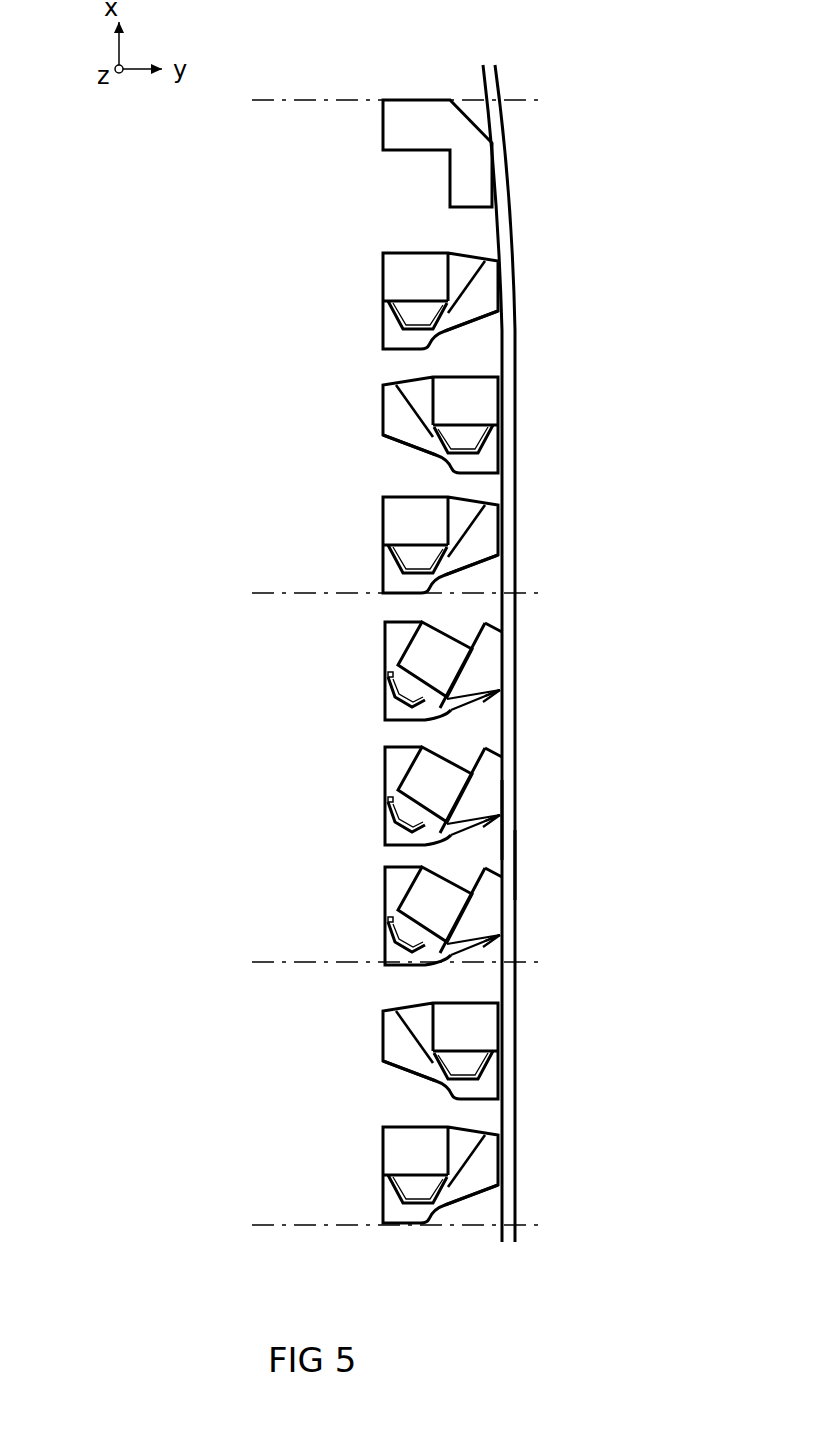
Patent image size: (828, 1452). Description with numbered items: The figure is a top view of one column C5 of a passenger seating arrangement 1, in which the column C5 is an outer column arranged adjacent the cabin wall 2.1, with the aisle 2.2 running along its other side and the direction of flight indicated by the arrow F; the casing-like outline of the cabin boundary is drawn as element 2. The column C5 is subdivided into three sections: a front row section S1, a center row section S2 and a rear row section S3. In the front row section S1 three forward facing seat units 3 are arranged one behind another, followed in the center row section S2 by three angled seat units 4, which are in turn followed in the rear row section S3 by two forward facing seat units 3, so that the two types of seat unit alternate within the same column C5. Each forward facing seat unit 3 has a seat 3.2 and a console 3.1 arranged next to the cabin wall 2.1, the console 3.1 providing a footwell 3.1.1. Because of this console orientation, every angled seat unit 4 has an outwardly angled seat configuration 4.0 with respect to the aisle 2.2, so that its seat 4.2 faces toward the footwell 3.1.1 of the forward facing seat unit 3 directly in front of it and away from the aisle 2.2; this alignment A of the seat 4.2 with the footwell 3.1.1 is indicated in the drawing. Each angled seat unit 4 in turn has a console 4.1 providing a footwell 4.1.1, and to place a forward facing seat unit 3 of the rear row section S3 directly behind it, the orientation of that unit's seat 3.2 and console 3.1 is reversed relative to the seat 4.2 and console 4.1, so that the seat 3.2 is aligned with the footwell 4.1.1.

The passenger seating arrangement 1 is at (529, 868).
The casing 2 is at (519, 455).
The cabin wall 2.1 is at (505, 818).
The aisle 2.2 is at (343, 180).
The forward facing seat unit 3 is at (499, 298).
The console 3.1 is at (485, 278).
The footwell 3.1.1 is at (462, 328).
The seat 3.2 is at (405, 280).
The angled seat unit 4 is at (519, 793).
The outwardly angled seat configuration 4.0 is at (505, 645).
The console 4.1 is at (485, 668).
The footwell 4.1.1 is at (494, 692).
The seat 4.2 is at (412, 650).
The alignment A is at (470, 573).
The column C5 is at (460, 1243).
The flow direction F is at (387, 75).
The front row section S1 is at (259, 291).
The center row section S2 is at (259, 779).
The rear row section S3 is at (247, 1121).